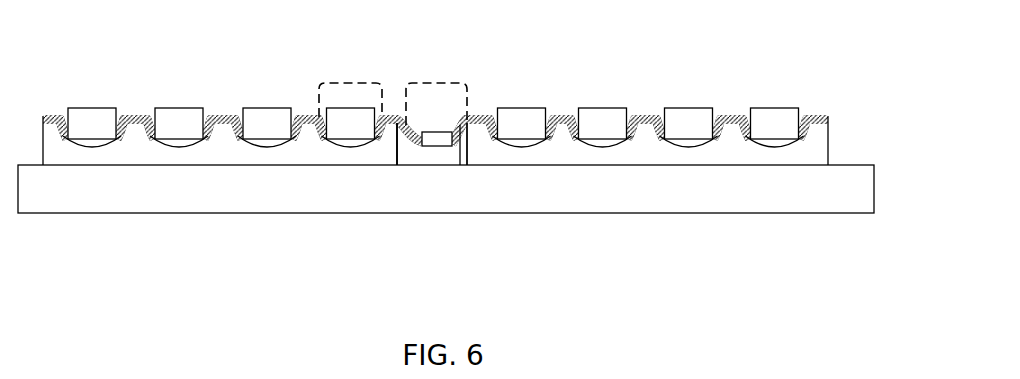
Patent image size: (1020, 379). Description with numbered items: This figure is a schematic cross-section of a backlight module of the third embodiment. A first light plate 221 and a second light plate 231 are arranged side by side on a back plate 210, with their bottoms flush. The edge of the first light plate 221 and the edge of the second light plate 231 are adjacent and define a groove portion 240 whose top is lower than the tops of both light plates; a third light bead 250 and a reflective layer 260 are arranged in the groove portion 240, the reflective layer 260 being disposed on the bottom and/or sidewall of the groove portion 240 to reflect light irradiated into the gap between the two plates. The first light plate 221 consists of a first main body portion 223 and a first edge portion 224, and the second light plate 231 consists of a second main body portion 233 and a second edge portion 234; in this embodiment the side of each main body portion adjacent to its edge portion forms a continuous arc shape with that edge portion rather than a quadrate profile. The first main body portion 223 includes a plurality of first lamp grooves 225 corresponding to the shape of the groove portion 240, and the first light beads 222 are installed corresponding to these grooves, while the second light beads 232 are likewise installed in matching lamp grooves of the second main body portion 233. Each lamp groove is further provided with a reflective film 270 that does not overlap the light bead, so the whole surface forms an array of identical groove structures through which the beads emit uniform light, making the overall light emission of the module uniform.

The back plate 210 is at (848, 190).
The first light plate 221 is at (247, 266).
The first light beads 222 is at (268, 113).
The first main body portion 223 is at (245, 152).
The first edge portion 224 is at (407, 157).
The first lamp grooves 225 is at (345, 83).
The second light plate 231 is at (478, 266).
The second light beads 232 is at (684, 113).
The second main body portion 233 is at (622, 157).
The second edge portion 234 is at (469, 158).
The groove portion 240 is at (431, 83).
The third light bead 250 is at (436, 132).
The reflective layer 260 is at (416, 147).
The reflective film 270 is at (222, 115).